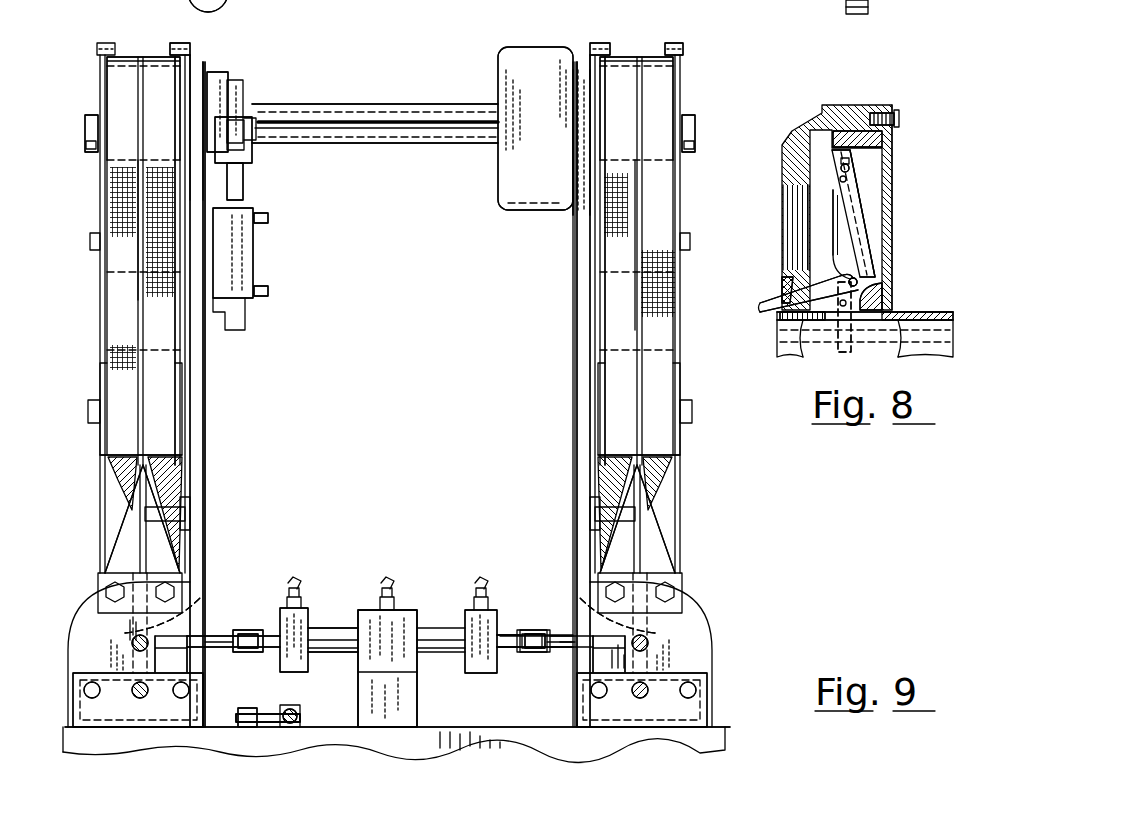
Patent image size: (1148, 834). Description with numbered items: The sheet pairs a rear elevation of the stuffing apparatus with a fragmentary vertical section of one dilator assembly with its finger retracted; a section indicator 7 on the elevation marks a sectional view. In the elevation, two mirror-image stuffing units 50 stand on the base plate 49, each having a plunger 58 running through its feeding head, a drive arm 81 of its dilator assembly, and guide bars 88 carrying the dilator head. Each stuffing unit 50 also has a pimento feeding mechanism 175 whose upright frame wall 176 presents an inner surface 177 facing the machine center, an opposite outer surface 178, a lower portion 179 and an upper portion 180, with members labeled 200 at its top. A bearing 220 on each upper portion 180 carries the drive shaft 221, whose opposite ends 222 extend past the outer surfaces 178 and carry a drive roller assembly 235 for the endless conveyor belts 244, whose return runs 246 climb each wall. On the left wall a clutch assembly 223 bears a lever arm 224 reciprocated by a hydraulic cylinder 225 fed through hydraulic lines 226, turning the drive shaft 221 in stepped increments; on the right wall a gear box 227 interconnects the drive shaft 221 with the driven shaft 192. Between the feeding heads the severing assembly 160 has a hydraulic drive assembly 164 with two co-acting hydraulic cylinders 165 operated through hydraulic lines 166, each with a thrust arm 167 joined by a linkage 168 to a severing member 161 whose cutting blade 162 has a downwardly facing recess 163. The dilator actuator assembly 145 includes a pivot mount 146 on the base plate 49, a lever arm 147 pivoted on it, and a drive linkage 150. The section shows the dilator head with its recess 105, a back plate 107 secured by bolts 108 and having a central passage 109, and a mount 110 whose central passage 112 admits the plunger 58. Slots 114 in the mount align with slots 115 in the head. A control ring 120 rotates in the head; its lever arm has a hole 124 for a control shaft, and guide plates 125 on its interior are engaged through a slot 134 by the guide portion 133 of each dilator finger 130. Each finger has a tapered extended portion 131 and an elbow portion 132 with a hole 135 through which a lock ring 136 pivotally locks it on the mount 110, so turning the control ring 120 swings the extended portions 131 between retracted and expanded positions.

In FIG. 9, the section line arrow 7 is at (600, 0).
In FIG. 9, the base plate 49 is at (411, 745).
In FIG. 9, the stuffing unit 50 is at (235, 393).
In FIG. 9, the plunger 58 is at (133, 642).
In FIG. 9, the drive arm 81 is at (140, 698).
In FIG. 9, the guide bar 88 is at (92, 682).
In FIG. 8, the recess 105 is at (790, 286).
In FIG. 8, the back plate 107 is at (893, 170).
In FIG. 8, the bolts 108 is at (897, 115).
In FIG. 8, the central passage 109 is at (900, 322).
In FIG. 8, the mount 110 is at (877, 293).
In FIG. 8, the central passage 112 is at (868, 320).
In FIG. 8, the slots 114 is at (843, 305).
In FIG. 8, the slots 115 is at (792, 202).
In FIG. 8, the control ring 120 is at (876, 140).
In FIG. 9, the hole 124 is at (237, 6).
In FIG. 8, the guide plates 125 is at (868, 186).
In FIG. 8, the dilator fingers 130 is at (834, 226).
In FIG. 8, the tapered extended portion 131 is at (763, 303).
In FIG. 8, the elbow portion 132 is at (878, 258).
In FIG. 8, the guide portion 133 is at (855, 234).
In FIG. 8, the slot 134 is at (850, 166).
In FIG. 8, the hole 135 is at (873, 280).
In FIG. 8, the lock ring 136 is at (851, 281).
In FIG. 9, the dilator actuator assembly 145 is at (263, 708).
In FIG. 9, the pivot mount 146 is at (242, 708).
In FIG. 9, the lever arm 147 is at (275, 722).
In FIG. 9, the drive linkage 150 is at (298, 712).
In FIG. 9, the severing assembly 160 is at (226, 584).
In FIG. 9, the severing members 161 is at (224, 638).
In FIG. 9, the cutting blade 162 is at (610, 640).
In FIG. 9, the downwardly facing recess 163 is at (190, 618).
In FIG. 9, the hydraulic drive assembly 164 is at (440, 562).
In FIG. 9, the hydraulic cylinders 165 is at (352, 645).
In FIG. 9, the hydraulic lines 166 is at (300, 590).
In FIG. 9, the thrust arm 167 is at (273, 618).
In FIG. 9, the linkage 168 is at (250, 633).
In FIG. 9, the pimento feeding mechanism 175 is at (254, 72).
In FIG. 9, the upright frame wall 176 is at (206, 366).
In FIG. 9, the inner surface 177 is at (205, 440).
In FIG. 9, the outer surface 178 is at (182, 478).
In FIG. 9, the lower portion 179 is at (193, 718).
In FIG. 9, the upper portion 180 is at (580, 67).
In FIG. 9, the driven shaft 192 is at (414, 104).
In FIG. 9, the top block 200 is at (696, 53).
In FIG. 9, the bearing 220 is at (228, 178).
In FIG. 9, the drive shaft 221 is at (468, 140).
In FIG. 9, the opposite ends 222 is at (85, 122).
In FIG. 9, the clutch assembly 223 is at (237, 92).
In FIG. 9, the lever arm 224 is at (240, 143).
In FIG. 9, the hydraulic cylinder 225 is at (245, 262).
In FIG. 9, the hydraulic lines 226 is at (268, 218).
In FIG. 9, the gear box 227 is at (553, 82).
In FIG. 9, the drive roller assembly 235 is at (180, 62).
In FIG. 9, the endless conveyor belts 244 is at (156, 58).
In FIG. 9, the return runs 246 is at (125, 320).